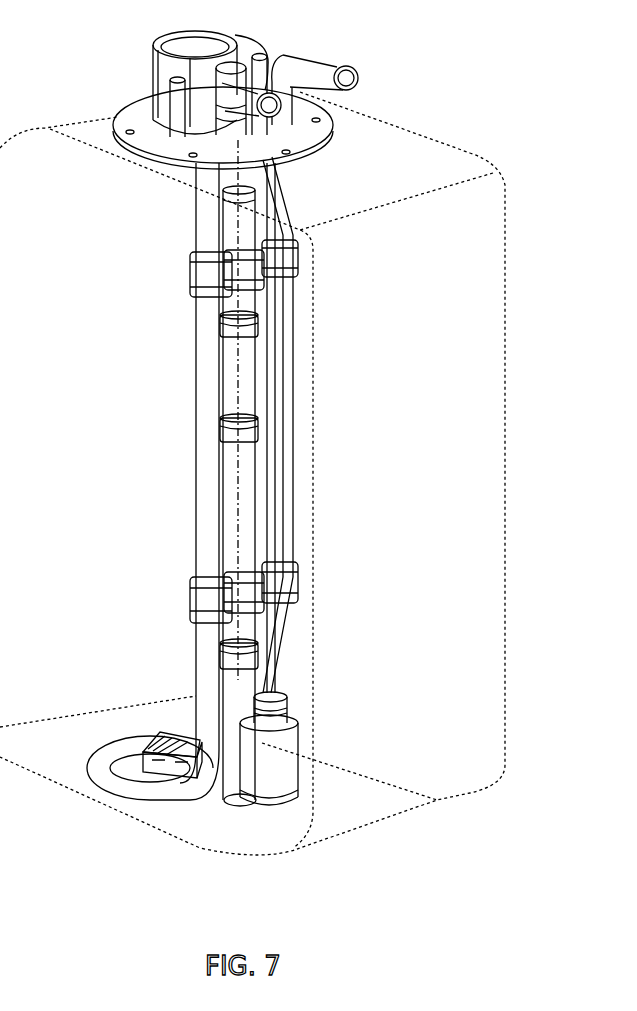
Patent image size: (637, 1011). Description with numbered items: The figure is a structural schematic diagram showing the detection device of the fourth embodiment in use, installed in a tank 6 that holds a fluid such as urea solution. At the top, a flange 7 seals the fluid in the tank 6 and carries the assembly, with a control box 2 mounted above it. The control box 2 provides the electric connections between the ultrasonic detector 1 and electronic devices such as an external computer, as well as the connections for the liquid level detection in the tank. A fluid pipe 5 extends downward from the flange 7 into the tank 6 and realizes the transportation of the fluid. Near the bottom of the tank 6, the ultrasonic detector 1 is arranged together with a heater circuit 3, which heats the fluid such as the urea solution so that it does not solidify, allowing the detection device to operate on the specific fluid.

The ultrasonic detector 1 is at (157, 742).
The control box 2 is at (125, 67).
The heater circuit 3 is at (108, 747).
The fluid pipe 5 is at (290, 460).
The tank 6 is at (472, 152).
The flange 7 is at (320, 116).